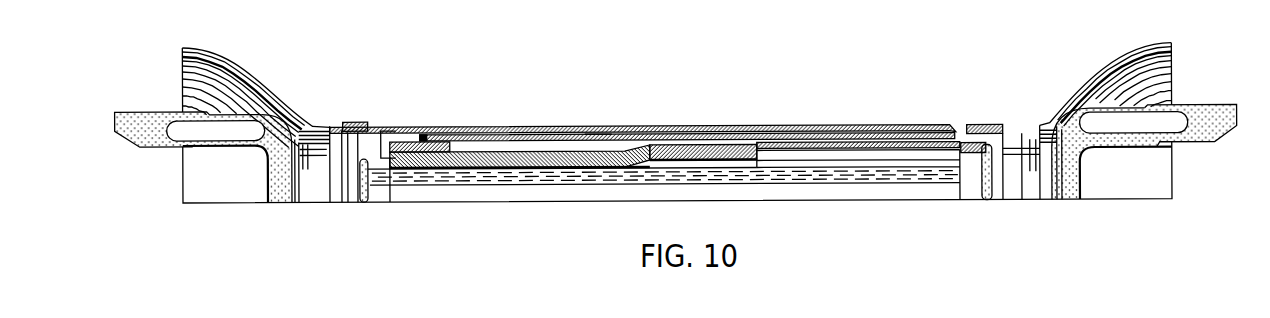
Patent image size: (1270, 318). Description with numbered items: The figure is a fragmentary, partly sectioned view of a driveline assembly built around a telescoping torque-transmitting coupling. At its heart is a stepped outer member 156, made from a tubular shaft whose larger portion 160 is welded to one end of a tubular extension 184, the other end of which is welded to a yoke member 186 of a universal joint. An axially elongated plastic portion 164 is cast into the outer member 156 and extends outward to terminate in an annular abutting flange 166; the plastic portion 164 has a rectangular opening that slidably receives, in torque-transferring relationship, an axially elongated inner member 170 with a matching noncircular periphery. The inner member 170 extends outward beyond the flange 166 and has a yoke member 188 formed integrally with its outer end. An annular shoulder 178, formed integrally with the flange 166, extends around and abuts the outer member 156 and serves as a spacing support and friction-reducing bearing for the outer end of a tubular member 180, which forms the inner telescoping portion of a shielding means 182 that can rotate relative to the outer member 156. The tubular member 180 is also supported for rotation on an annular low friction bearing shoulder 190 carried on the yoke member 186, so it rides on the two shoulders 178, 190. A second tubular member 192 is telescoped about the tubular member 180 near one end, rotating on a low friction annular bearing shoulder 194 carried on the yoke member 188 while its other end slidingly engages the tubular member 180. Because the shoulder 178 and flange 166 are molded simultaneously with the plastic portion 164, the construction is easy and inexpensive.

The outer member 156 is at (595, 152).
The larger portion 160 is at (695, 150).
The plastic portion 164 is at (532, 170).
The annular abutting flange 166 is at (382, 132).
The inner member 170 is at (611, 190).
The annular shoulder 178 is at (437, 142).
The tubular member 180 is at (500, 136).
The shielding means 182 is at (672, 129).
The tubular extension 184 is at (860, 146).
The yoke member 186 is at (1200, 114).
The yoke member 188 is at (177, 117).
The annular low friction bearing shoulder 190 is at (1006, 128).
The second tubular member 192 is at (598, 136).
The low friction annular bearing shoulder 194 is at (348, 123).